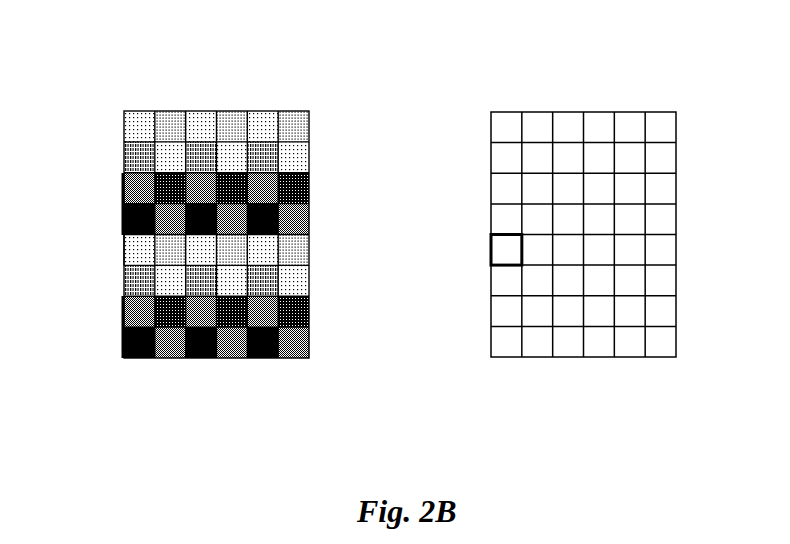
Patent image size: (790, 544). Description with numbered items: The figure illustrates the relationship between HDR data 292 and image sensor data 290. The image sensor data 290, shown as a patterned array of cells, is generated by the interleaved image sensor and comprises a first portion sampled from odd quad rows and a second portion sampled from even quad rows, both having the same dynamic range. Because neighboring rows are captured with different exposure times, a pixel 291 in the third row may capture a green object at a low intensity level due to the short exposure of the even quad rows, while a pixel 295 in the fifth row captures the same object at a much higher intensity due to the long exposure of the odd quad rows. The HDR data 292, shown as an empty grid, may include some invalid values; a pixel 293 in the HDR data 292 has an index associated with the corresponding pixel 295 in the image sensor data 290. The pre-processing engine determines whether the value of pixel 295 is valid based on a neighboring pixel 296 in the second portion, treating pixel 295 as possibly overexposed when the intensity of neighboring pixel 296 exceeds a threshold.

The image sensor data 290 is at (312, 78).
The pixel 291 is at (122, 188).
The pixel 295 is at (122, 251).
The neighboring pixel 296 is at (122, 311).
The HDR data 292 is at (680, 77).
The pixel 293 is at (490, 252).